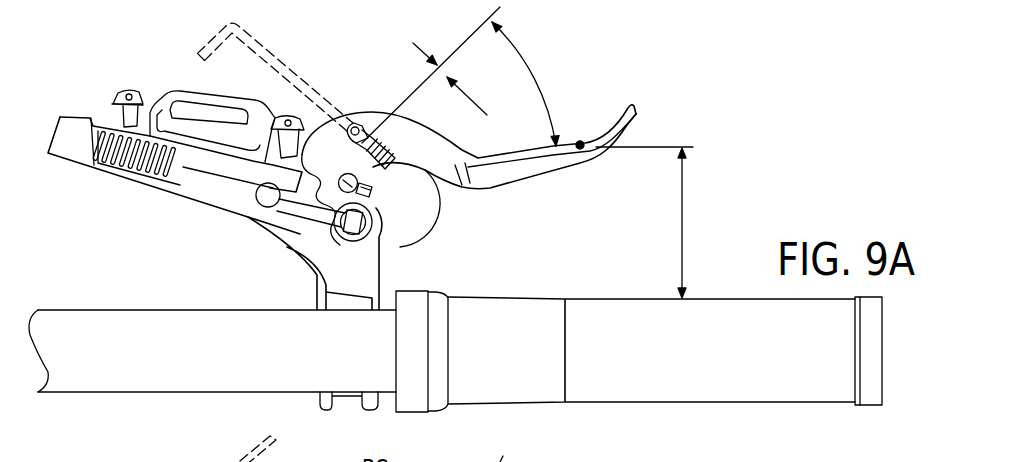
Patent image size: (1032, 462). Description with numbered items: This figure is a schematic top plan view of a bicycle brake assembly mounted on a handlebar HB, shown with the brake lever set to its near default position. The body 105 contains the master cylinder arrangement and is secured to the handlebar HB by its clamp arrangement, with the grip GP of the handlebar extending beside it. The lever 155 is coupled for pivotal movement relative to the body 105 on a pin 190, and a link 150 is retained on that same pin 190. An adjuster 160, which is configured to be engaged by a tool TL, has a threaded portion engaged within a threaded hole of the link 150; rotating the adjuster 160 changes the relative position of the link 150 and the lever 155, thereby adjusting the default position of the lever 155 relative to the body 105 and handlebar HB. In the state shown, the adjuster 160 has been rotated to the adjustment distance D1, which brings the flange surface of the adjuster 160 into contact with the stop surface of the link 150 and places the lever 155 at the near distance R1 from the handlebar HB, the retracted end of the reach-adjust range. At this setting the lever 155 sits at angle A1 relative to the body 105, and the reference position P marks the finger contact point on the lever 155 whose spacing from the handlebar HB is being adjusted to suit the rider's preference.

The body 105 is at (241, 217).
The link 150 is at (388, 235).
The lever 155 is at (537, 171).
The adjuster 160 is at (366, 128).
The pin 190 is at (365, 192).
The tool TL is at (297, 80).
The adjustment of adjuster at default position R1 D1 is at (431, 75).
The angle of lever at adjusted default position R1 A1 is at (527, 84).
The reference position for finger contact point P is at (580, 141).
The near distance/position R1 is at (654, 222).
The handlebar HB is at (167, 381).
The grip GP is at (736, 395).